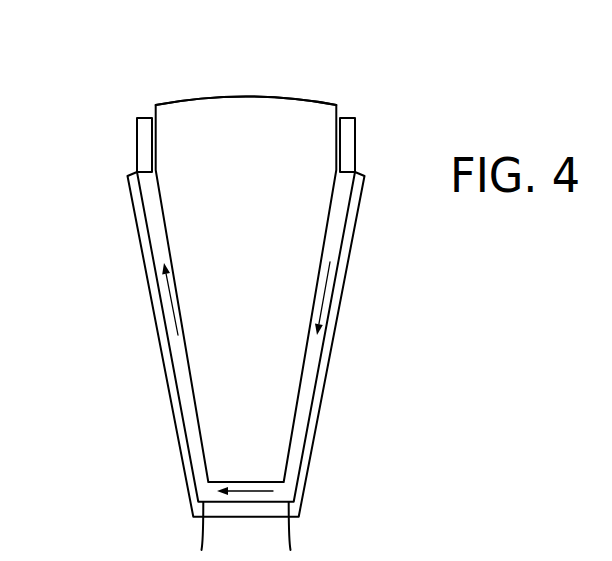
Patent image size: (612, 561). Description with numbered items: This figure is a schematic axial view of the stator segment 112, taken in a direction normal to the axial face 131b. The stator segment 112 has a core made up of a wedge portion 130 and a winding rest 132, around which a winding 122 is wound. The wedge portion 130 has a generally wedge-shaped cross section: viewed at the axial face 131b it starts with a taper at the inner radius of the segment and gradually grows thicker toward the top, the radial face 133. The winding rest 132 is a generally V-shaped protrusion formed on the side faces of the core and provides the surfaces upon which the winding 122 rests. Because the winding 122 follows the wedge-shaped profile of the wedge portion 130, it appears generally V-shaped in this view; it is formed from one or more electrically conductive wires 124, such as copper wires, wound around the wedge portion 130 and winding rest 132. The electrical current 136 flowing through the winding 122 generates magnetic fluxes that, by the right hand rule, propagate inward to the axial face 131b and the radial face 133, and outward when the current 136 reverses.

The stator segment 112 is at (40, 27).
The winding 122 is at (143, 117).
The electrically conductive wires 124 is at (203, 532).
The wedge portion 130 is at (272, 393).
The axial face 131b is at (261, 142).
The winding rest 132 is at (135, 213).
The radial face 133 is at (198, 99).
The electrical current 136 is at (172, 305).